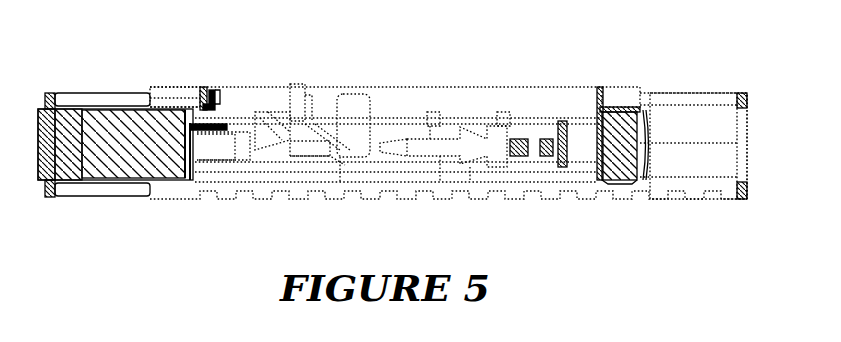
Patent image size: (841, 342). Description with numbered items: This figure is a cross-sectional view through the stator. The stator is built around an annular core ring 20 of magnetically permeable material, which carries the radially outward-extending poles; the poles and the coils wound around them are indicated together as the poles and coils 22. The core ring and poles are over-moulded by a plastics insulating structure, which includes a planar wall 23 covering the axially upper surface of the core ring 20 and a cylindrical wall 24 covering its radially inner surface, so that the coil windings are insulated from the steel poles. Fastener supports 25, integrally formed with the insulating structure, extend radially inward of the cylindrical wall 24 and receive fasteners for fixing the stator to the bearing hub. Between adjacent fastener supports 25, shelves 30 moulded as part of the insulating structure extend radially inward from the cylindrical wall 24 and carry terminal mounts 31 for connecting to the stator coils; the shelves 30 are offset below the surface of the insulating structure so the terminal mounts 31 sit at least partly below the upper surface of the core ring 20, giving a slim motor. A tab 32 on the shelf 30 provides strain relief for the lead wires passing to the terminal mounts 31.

The core ring 20 is at (623, 118).
The poles and coils 22 is at (100, 122).
The planar side or wall 23 is at (617, 108).
The cylindrical wall 24 is at (195, 138).
The fastener support 25 is at (295, 140).
The shelf 30 is at (203, 122).
The terminal mount 31 is at (220, 105).
The tab 32 is at (232, 139).